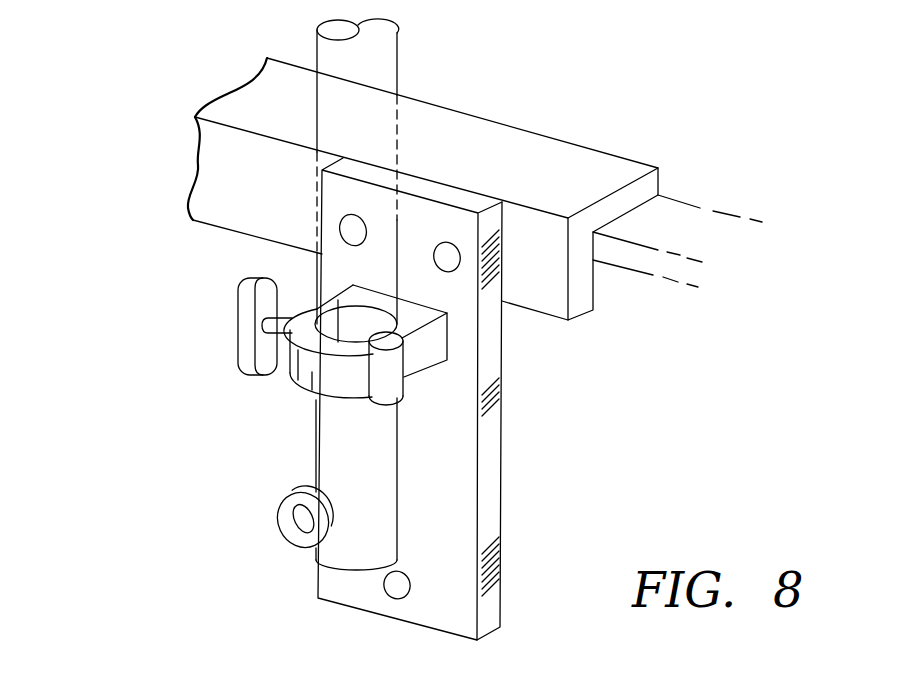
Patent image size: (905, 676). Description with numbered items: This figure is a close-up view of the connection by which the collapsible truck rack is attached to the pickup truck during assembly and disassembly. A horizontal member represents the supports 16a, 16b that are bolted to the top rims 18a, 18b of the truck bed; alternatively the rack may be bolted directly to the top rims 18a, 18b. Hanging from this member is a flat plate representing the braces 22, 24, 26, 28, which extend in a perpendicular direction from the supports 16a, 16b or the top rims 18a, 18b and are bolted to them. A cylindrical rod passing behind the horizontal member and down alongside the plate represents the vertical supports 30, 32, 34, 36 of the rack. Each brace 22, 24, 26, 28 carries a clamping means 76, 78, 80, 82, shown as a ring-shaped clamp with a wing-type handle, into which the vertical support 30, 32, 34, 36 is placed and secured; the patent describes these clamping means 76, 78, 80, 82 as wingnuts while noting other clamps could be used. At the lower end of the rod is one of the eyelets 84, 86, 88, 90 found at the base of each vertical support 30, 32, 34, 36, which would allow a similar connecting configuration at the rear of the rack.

The support 16a is at (423, 189).
The support 16b is at (590, 168).
The top rim 18a is at (681, 203).
The top rim 18b is at (712, 220).
The brace 22 is at (546, 399).
The brace 24 is at (546, 399).
The brace 26 is at (546, 399).
The brace 28 is at (498, 445).
The first vertical support 30 is at (471, 294).
The second vertical support 32 is at (471, 294).
The third vertical support 34 is at (471, 294).
The fourth vertical support 36 is at (399, 57).
The clamping means 76 is at (237, 347).
The clamping means 78 is at (237, 347).
The clamping means 80 is at (237, 347).
The clamping means 82 is at (292, 385).
The eyelet 84 is at (216, 520).
The eyelet 86 is at (216, 520).
The eyelet 88 is at (216, 520).
The eyelet 90 is at (291, 542).